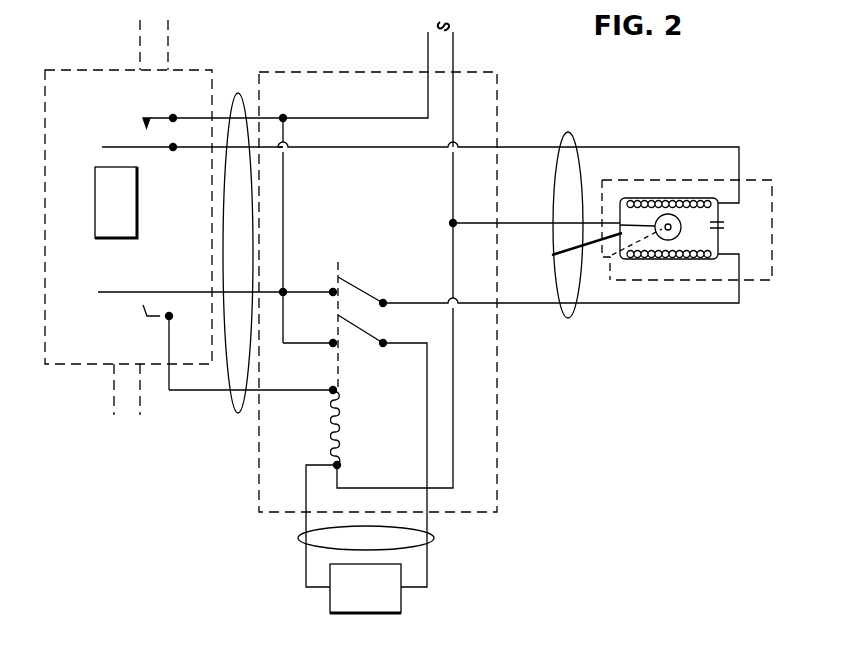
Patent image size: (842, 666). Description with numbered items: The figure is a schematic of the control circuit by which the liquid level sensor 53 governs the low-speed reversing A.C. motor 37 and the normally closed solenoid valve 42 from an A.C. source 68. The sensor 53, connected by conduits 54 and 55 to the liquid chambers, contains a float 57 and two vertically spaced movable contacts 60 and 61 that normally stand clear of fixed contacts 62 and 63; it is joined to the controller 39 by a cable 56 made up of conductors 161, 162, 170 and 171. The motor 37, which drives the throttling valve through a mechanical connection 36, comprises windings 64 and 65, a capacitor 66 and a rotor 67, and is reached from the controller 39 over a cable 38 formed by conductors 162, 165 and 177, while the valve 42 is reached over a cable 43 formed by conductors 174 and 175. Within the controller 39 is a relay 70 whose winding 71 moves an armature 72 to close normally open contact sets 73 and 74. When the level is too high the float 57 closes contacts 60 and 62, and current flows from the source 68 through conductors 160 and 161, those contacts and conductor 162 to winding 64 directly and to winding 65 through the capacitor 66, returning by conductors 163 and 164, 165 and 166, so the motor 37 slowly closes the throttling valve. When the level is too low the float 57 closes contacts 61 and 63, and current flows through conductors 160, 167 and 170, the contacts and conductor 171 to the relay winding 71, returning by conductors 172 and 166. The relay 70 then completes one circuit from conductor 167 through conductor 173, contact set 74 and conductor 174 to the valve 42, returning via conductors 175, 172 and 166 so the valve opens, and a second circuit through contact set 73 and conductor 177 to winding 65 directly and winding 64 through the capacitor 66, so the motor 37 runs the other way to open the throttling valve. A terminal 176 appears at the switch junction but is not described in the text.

The mechanical connection 36 is at (608, 241).
The low-speed reversing A.C. motor 37 is at (775, 246).
The cable 38 is at (568, 132).
The controller 39 is at (497, 332).
The normally closed solenoid valve 42 is at (383, 611).
The cable 43 is at (435, 538).
The liquid level sensor 53 is at (97, 69).
The conduit 54 is at (170, 66).
The conduit 55 is at (112, 379).
The cable 56 is at (238, 93).
The float 57 is at (137, 203).
The movable contact 60 is at (105, 147).
The movable contact 61 is at (110, 292).
The fixed contact 62 is at (153, 118).
The fixed contact 63 is at (160, 318).
The motor winding 64 is at (683, 198).
The motor winding 65 is at (683, 262).
The capacitor 66 is at (727, 225).
The rotor 67 is at (655, 226).
The A.C. source 68 is at (441, 73).
The relay 70 is at (324, 413).
The relay winding 71 is at (342, 441).
The armature 72 is at (340, 365).
The contact set 73 is at (352, 288).
The contact set 74 is at (348, 326).
The conductor 160 is at (366, 117).
The conductor 161 is at (273, 117).
The conductor 162 is at (348, 148).
The conductor 163 is at (615, 197).
The conductor 164 is at (552, 255).
The conductor 165 is at (486, 223).
The conductor 166 is at (452, 203).
The conductor 167 is at (284, 203).
The conductor 170 is at (265, 292).
The conductor 171 is at (294, 390).
The conductor 172 is at (454, 410).
The conductor 173 is at (285, 325).
The conductor 174 is at (425, 391).
The conductor 175 is at (306, 490).
The contact 176 is at (315, 292).
The conductor 177 is at (413, 303).